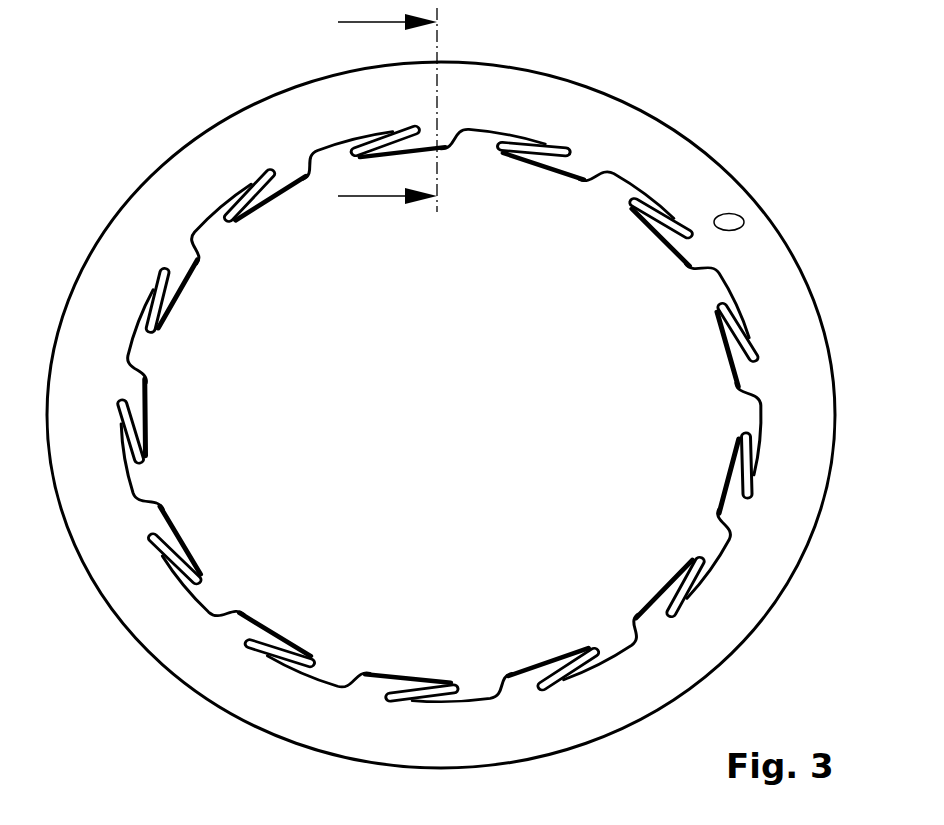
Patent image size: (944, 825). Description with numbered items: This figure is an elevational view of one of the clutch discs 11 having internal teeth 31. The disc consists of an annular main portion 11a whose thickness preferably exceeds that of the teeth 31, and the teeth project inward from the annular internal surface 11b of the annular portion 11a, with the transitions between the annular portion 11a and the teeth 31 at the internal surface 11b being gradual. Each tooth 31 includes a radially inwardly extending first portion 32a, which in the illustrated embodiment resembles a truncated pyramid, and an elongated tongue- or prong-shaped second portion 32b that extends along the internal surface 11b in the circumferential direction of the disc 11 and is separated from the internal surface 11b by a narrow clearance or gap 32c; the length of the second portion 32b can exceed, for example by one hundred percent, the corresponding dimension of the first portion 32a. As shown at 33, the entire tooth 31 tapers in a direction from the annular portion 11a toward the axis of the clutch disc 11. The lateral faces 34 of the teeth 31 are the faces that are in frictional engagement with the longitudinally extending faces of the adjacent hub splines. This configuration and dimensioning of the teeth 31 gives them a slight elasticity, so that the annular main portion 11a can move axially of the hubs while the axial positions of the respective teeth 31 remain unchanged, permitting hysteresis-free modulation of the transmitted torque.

The clutch disc 11 is at (773, 192).
The annular main portion 11a is at (684, 155).
The annular internal surface 11b is at (763, 425).
The internal teeth 31 is at (532, 150).
The first portion 32a is at (511, 686).
The second portion 32b is at (567, 658).
The clearance or gap 32c is at (697, 598).
The taper 33 is at (355, 150).
The lateral faces 34 is at (363, 688).